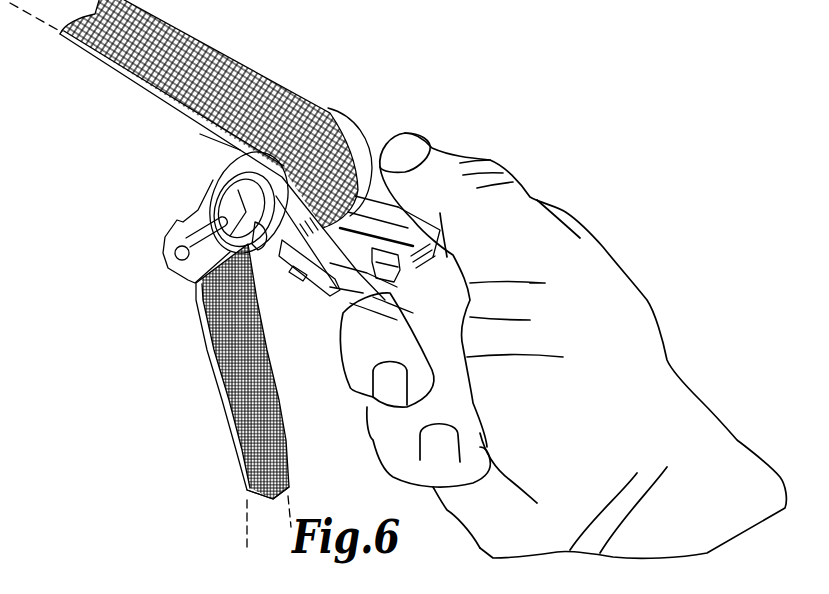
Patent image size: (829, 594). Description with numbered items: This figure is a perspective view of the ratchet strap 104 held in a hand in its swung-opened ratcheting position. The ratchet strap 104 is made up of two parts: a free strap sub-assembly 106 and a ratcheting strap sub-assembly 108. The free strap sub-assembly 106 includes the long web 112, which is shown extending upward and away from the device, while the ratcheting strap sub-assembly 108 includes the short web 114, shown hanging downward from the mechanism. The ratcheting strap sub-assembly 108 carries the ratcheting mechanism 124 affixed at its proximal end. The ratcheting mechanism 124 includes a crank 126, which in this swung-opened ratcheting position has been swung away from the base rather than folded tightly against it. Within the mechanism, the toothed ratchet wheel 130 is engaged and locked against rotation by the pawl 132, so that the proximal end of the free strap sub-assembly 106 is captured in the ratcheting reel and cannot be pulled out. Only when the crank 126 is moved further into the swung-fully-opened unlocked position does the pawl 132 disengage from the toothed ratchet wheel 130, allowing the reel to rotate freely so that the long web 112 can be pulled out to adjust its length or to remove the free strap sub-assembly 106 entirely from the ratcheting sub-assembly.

The ratchet strap 104 is at (218, 397).
The free strap sub-assembly 106 is at (200, 45).
The ratcheting strap sub-assembly 108 is at (203, 352).
The long web 112 is at (147, 97).
The short web 114 is at (232, 440).
The ratcheting mechanism 124 is at (212, 170).
The crank 126 is at (458, 310).
The toothed ratchet wheel 130 is at (210, 184).
The pawl 132 is at (280, 272).